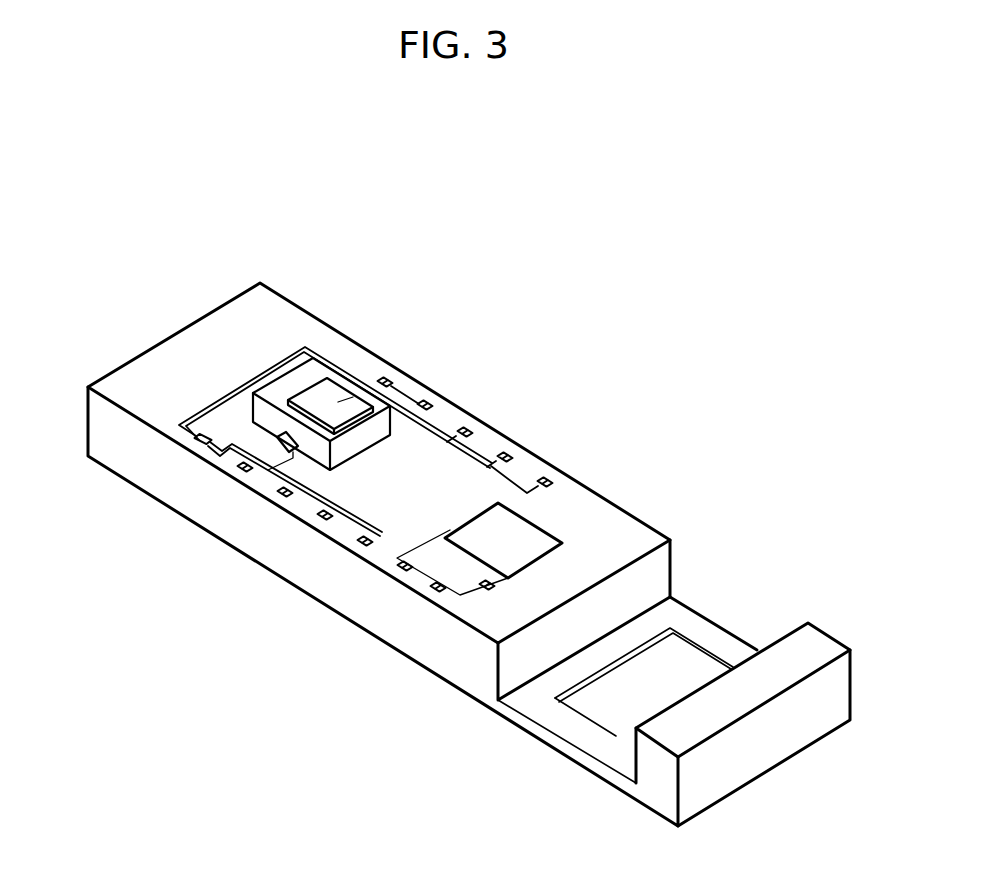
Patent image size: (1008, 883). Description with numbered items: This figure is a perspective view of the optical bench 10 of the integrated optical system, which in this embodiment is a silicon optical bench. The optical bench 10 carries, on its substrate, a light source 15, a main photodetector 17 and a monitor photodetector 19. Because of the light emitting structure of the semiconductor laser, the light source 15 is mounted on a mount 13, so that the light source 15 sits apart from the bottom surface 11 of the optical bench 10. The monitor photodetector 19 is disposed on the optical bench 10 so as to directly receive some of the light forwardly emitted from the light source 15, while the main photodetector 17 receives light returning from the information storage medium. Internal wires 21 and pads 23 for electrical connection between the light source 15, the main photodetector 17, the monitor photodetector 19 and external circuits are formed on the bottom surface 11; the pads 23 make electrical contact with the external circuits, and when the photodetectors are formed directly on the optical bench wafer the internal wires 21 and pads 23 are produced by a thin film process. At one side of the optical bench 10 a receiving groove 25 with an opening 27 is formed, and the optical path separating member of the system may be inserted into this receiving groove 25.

The optical bench 10 is at (152, 308).
The bottom surface 11 is at (270, 318).
The mount 13 is at (303, 372).
The light source 15 is at (390, 378).
The main photodetector 17 is at (197, 440).
The monitor photodetector 19 is at (500, 547).
The internal wires 21 is at (355, 521).
The pads 23 is at (438, 585).
The receiving groove 25 is at (600, 737).
The opening 27 is at (672, 667).